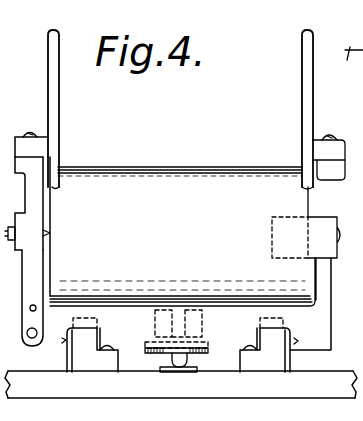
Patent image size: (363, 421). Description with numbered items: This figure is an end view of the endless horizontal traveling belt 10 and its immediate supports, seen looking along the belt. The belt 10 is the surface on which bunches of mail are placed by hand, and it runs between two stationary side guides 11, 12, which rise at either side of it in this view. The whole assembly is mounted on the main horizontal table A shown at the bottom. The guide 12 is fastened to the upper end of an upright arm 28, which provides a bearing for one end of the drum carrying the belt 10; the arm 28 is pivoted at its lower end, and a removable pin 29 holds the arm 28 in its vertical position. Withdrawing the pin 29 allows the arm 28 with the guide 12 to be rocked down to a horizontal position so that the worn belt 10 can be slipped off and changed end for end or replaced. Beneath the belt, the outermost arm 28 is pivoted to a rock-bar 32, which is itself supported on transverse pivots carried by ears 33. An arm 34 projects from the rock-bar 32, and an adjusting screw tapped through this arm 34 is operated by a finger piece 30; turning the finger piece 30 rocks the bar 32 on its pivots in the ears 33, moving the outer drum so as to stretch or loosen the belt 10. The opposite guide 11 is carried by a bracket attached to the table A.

The endless horizontal traveling belt 10 is at (183, 236).
The stationary side guide 11 is at (313, 103).
The stationary side guide 12 is at (60, 103).
The upright arm 28 is at (46, 245).
The removable pin 29 is at (37, 304).
The finger piece 30 is at (202, 355).
The rock-bar 32 is at (136, 338).
The ears 33 is at (78, 340).
The arm projecting from rock-bar 34 is at (228, 336).
The main horizontal table A is at (181, 386).